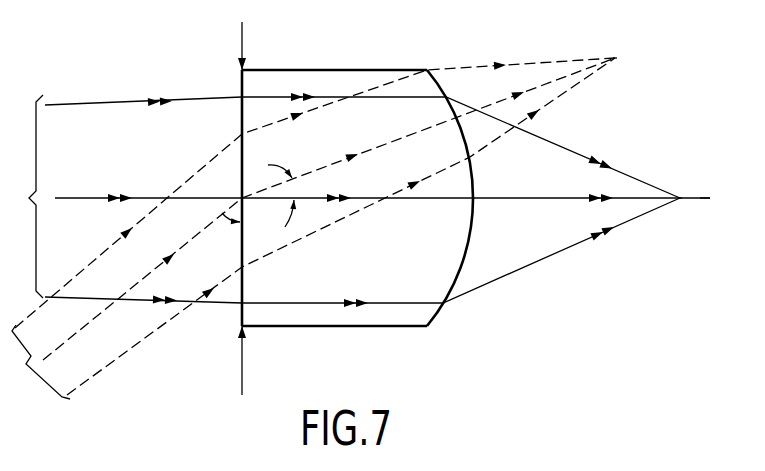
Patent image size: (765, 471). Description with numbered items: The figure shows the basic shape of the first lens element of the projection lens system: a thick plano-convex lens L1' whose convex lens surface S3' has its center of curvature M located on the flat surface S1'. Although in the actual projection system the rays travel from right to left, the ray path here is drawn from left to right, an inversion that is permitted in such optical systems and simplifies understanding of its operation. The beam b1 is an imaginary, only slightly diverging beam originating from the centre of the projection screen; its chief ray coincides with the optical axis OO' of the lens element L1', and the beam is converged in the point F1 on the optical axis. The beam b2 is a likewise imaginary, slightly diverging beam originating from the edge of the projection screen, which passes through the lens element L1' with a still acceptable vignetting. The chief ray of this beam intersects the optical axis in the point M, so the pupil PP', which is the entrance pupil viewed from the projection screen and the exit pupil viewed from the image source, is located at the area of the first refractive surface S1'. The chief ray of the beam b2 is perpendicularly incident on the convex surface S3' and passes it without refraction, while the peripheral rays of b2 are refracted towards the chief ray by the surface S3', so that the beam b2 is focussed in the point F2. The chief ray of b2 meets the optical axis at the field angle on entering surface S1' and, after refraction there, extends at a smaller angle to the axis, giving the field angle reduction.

The thick plano-convex lens L1' is at (360, 217).
The flat surface S1' is at (225, 211).
The convex lens surface S3' is at (470, 198).
The pupil P is at (247, 45).
The pupil P' is at (249, 360).
The optical axis O is at (376, 200).
The optical axis O' is at (715, 197).
The imaginary beam b1 is at (342, 200).
The imaginary beam b2 is at (313, 228).
The center of curvature M is at (241, 196).
The focal point F1 is at (688, 215).
The focal point F2 is at (615, 58).